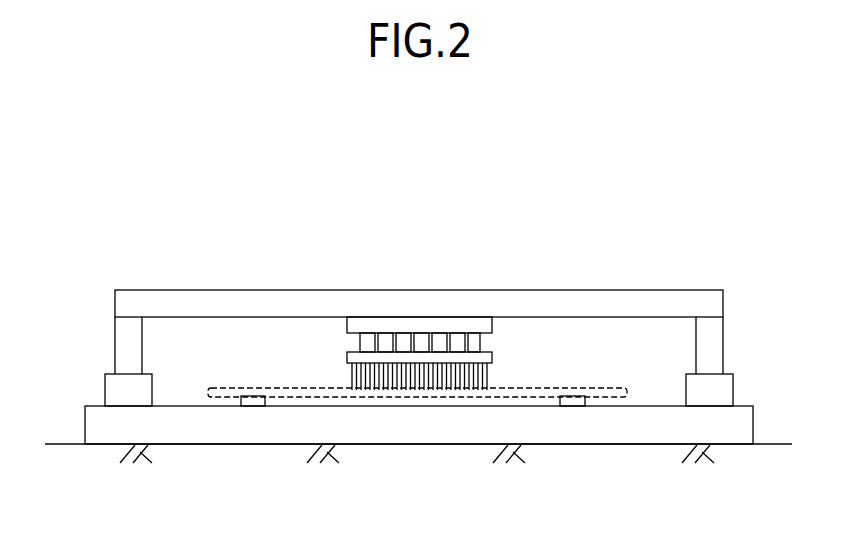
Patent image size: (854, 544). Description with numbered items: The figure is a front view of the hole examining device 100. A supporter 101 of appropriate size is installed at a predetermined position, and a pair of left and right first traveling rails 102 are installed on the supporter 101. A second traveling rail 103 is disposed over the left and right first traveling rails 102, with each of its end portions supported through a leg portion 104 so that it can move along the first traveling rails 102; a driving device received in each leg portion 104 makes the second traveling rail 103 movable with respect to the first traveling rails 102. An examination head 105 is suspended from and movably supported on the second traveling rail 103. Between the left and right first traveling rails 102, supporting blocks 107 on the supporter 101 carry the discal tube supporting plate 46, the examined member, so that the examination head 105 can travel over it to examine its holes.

The hole examining device 100 is at (662, 180).
The supporter 101 is at (183, 446).
The first traveling rail 102 is at (115, 387).
The second traveling rail 103 is at (371, 290).
The leg portion 104 is at (115, 343).
The examination head 105 is at (492, 343).
The supporting block 107 is at (257, 404).
The tube supporting plate 46 is at (230, 387).